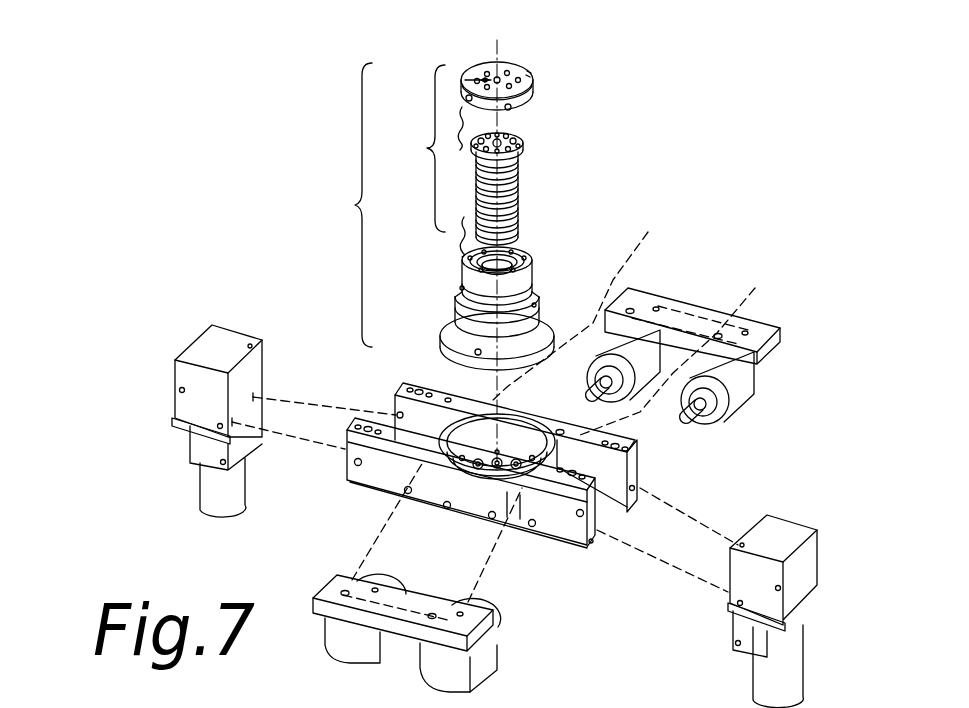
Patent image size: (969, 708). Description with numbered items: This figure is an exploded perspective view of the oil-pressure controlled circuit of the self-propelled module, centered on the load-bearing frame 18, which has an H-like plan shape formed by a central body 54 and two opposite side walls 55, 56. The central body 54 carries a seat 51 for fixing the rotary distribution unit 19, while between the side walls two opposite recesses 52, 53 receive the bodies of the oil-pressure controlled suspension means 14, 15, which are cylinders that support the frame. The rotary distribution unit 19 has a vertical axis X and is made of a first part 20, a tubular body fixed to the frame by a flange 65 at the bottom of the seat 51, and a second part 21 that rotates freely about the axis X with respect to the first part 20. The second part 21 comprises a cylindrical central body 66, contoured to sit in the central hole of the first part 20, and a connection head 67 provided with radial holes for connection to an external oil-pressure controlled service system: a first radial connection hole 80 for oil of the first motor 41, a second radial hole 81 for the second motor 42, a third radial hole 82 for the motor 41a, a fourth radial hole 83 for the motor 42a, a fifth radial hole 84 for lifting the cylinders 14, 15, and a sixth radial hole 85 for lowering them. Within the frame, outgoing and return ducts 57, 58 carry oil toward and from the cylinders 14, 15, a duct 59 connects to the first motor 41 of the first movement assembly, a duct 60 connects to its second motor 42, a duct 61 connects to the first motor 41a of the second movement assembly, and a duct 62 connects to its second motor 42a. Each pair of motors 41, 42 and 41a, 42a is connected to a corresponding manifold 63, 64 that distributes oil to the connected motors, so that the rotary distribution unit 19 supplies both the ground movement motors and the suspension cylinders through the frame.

The oil-pressure controlled suspension means 14 is at (207, 345).
The oil-pressure controlled suspension means 15 is at (812, 550).
The load-bearing frame 18 is at (484, 490).
The rotary distribution unit 19 is at (357, 205).
The first part 20 is at (494, 311).
The second part 21 is at (429, 148).
The first motor 41 is at (640, 340).
The first motor 41a is at (357, 658).
The second motor 42 is at (753, 390).
The second motor 42a is at (433, 683).
The seat 51 is at (390, 457).
The recess 52 is at (398, 413).
The recess 53 is at (597, 510).
The central body 54 is at (520, 424).
The side wall 55 is at (525, 490).
The side wall 56 is at (428, 387).
The outgoing duct 57 is at (303, 440).
The return duct 58 is at (325, 405).
The duct 59 is at (578, 301).
The duct 60 is at (677, 346).
The duct 61 is at (377, 545).
The duct 62 is at (493, 600).
The manifold 63 is at (770, 325).
The manifold 64 is at (333, 587).
The flange 65 is at (448, 325).
The cylindrical central body 66 is at (535, 186).
The connection head 67 is at (505, 69).
The first radial connection hole 80 is at (489, 63).
The second radial hole 81 is at (537, 90).
The third radial hole 82 is at (465, 74).
The fourth radial hole 83 is at (537, 68).
The fifth radial hole 84 is at (470, 100).
The sixth radial hole 85 is at (510, 104).
The vertical axis X is at (512, 128).